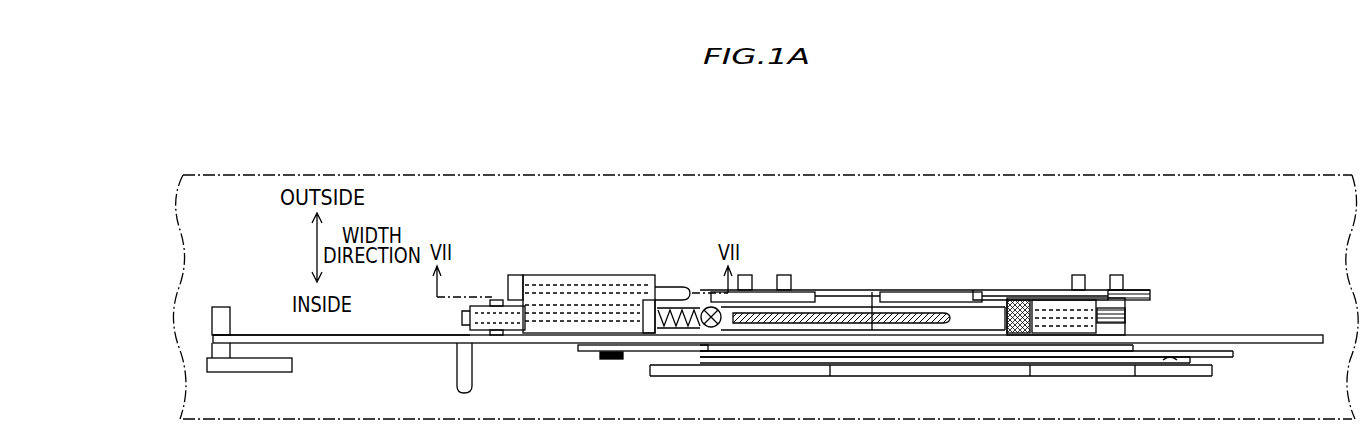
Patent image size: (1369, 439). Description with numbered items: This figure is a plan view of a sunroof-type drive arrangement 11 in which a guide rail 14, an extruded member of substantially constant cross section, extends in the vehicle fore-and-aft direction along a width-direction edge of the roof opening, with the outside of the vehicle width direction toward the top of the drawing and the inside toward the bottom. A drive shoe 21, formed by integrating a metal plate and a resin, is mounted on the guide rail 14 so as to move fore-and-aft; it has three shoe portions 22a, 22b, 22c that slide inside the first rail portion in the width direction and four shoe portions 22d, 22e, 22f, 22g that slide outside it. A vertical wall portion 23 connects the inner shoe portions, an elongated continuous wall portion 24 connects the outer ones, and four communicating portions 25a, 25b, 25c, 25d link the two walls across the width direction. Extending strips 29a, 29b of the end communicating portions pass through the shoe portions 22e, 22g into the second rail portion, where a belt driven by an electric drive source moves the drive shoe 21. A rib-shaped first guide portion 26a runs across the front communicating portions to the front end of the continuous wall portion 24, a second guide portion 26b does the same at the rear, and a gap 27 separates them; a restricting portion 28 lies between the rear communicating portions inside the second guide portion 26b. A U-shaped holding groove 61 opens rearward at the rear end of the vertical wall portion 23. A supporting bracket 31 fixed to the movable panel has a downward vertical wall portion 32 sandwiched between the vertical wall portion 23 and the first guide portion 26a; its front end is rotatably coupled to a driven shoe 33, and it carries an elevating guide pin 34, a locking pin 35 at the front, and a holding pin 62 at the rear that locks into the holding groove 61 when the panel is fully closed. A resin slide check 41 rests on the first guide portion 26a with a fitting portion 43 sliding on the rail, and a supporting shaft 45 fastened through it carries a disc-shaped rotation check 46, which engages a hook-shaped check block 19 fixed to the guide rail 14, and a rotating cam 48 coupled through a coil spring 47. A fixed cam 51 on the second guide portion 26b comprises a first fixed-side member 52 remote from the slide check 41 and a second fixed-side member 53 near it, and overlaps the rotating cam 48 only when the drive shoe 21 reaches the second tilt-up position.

The sheet feeding apparatus 11 is at (1163, 158).
The guide rail 14 is at (290, 175).
The check block 19 is at (668, 287).
The drive shoe 21 is at (1103, 376).
The shoe portion 22a is at (735, 376).
The shoe portion 22b is at (950, 376).
The shoe portion 22c is at (1198, 376).
The shoe portion 22d is at (583, 282).
The shoe portion 22e is at (801, 292).
The shoe portion 22f is at (932, 292).
The shoe portion 22g is at (1143, 290).
The vertical wall portion 23 is at (585, 351).
The continuous wall portion 24 is at (860, 290).
The communicating portion 25a is at (800, 330).
The communicating portion 25b is at (920, 330).
The communicating portion 25c is at (1005, 351).
The communicating portion 25d is at (1128, 327).
The first guide portion 26a is at (873, 292).
The second guide portion 26b is at (1152, 296).
The gap 27 is at (953, 318).
The restricting portion 28 is at (1053, 363).
The extending strip 29a is at (784, 275).
The extending strip 29b is at (1116, 275).
The supporting bracket 31 is at (398, 343).
The vertical wall portion 32 is at (331, 343).
The driven shoe 33 is at (247, 372).
The elevating guide pin 34 is at (610, 359).
The locking pin 35 is at (490, 343).
The slide check 41 is at (535, 275).
The fitting portion 43 is at (625, 275).
The supporting shaft 45 is at (468, 318).
The rotation check 46 is at (648, 333).
The coil spring 47 is at (672, 330).
The rotating cam 48 is at (715, 329).
The fixed cam 51 is at (1067, 240).
The first fixed-side member 52 is at (1040, 298).
The second fixed-side member 53 is at (1018, 300).
The holding groove 61 is at (1235, 352).
The holding pin 62 is at (1170, 363).